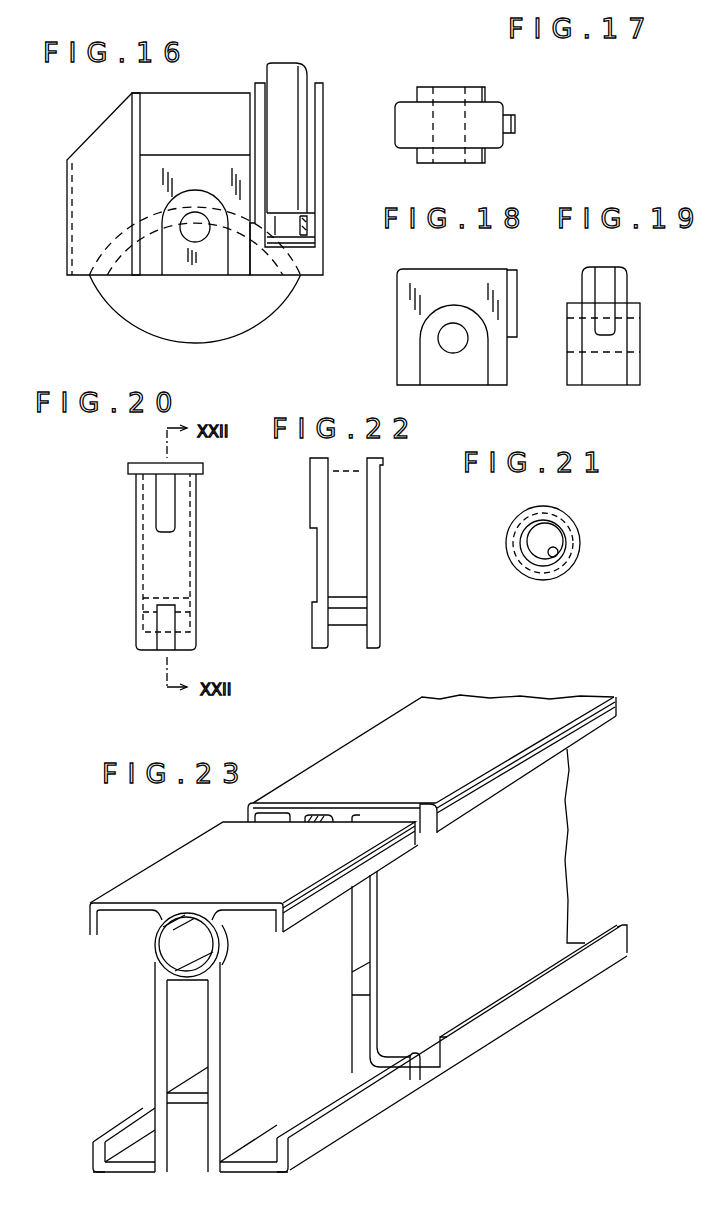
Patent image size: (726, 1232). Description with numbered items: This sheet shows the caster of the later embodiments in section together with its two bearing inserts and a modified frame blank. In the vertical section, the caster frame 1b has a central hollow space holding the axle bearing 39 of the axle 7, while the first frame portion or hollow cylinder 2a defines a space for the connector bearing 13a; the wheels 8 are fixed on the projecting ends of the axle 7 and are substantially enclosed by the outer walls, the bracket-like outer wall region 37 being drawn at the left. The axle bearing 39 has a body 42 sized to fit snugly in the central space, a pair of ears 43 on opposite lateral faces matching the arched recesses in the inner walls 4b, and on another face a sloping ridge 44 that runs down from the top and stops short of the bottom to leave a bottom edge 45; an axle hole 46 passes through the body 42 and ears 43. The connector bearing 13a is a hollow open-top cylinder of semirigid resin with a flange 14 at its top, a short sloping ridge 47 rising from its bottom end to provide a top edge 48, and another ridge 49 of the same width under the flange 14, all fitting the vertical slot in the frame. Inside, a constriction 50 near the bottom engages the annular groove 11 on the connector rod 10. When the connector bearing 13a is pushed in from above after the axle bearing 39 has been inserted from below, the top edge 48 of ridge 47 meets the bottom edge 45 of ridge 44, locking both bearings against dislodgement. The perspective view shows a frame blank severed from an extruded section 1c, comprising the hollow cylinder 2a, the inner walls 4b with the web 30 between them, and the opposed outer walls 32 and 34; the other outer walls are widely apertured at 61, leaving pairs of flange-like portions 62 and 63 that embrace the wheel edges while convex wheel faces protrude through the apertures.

In FIG. 16, the caster frame 1b is at (202, 92).
In FIG. 23, the extruded section 1c is at (350, 742).
In FIG. 23, the hollow cylinder 2a is at (230, 950).
In FIG. 23, the inner walls 4b is at (235, 1005).
In FIG. 16, the axle 7 is at (187, 233).
In FIG. 16, the wheels 8 is at (263, 323).
In FIG. 16, the connector rod 10 is at (292, 83).
In FIG. 16, the annular groove 11 is at (303, 223).
In FIG. 16, the connector bearing 13a is at (307, 275).
In FIG. 20, the connector bearing 13a is at (130, 505).
In FIG. 22, the connector bearing 13a is at (308, 500).
In FIG. 21, the connector bearing 13a is at (507, 532).
In FIG. 20, the flange 14 is at (200, 470).
In FIG. 22, the flange 14 is at (385, 465).
In FIG. 21, the flange 14 is at (578, 542).
In FIG. 23, the web 30 is at (197, 1085).
In FIG. 23, the outer wall 32 is at (137, 890).
In FIG. 23, the outer wall 34 is at (257, 1150).
In FIG. 16, the roller bracket 37 is at (85, 138).
In FIG. 16, the axle bearing 39 is at (218, 265).
In FIG. 17, the axle bearing 39 is at (393, 105).
In FIG. 18, the axle bearing 39 is at (395, 312).
In FIG. 19, the axle bearing 39 is at (635, 285).
In FIG. 17, the body 42 is at (412, 127).
In FIG. 18, the body 42 is at (452, 282).
In FIG. 19, the body 42 is at (605, 372).
In FIG. 17, the ears 43 is at (473, 97).
In FIG. 18, the ears 43 is at (428, 342).
In FIG. 19, the ears 43 is at (578, 305).
In FIG. 17, the sloping ridge 44 is at (515, 125).
In FIG. 18, the sloping ridge 44 is at (513, 337).
In FIG. 19, the sloping ridge 44 is at (605, 285).
In FIG. 18, the bottom edge 45 is at (513, 338).
In FIG. 19, the bottom edge 45 is at (603, 338).
In FIG. 17, the axle hole 46 is at (435, 92).
In FIG. 18, the axle hole 46 is at (448, 345).
In FIG. 19, the axle hole 46 is at (642, 308).
In FIG. 20, the sloping ridge 47 is at (163, 642).
In FIG. 22, the sloping ridge 47 is at (312, 615).
In FIG. 20, the top edge 48 is at (163, 597).
In FIG. 22, the top edge 48 is at (312, 602).
In FIG. 20, the ridge 49 is at (167, 520).
In FIG. 22, the ridge 49 is at (312, 522).
In FIG. 16, the constriction 50 is at (303, 238).
In FIG. 22, the constriction 50 is at (352, 602).
In FIG. 21, the constriction 50 is at (555, 553).
In FIG. 23, the aperture 61 is at (118, 1130).
In FIG. 23, the flange-like portions 62 is at (88, 917).
In FIG. 23, the flange-like portions 63 is at (312, 905).